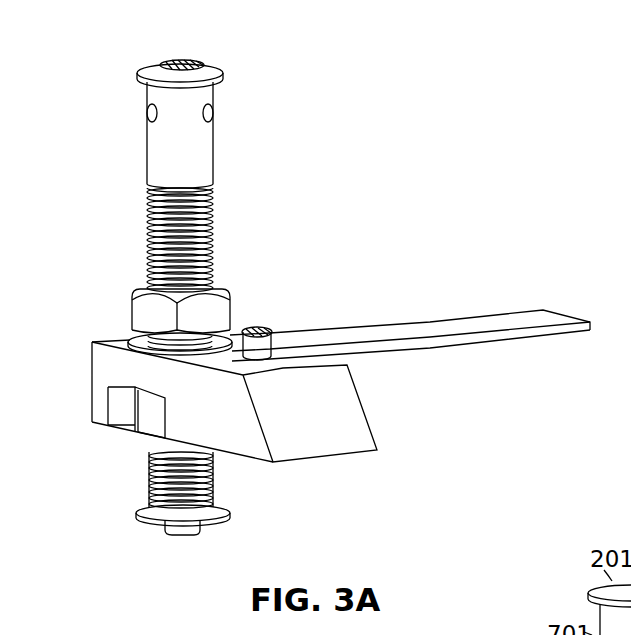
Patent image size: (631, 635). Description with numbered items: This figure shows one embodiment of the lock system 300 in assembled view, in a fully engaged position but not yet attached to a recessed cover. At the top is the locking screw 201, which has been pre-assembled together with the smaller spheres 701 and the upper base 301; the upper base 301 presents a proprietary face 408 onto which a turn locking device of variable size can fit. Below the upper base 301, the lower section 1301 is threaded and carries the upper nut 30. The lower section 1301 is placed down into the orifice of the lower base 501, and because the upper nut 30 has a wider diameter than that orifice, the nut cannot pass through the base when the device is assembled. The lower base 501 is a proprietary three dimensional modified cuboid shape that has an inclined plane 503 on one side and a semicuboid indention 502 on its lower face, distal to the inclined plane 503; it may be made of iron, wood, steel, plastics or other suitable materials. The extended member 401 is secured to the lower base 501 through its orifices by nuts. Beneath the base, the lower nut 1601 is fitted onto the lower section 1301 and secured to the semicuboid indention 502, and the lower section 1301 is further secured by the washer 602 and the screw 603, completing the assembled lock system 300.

The locking screw 201 is at (177, 60).
The proprietary face 408 is at (222, 74).
The upper base 301 is at (210, 176).
The smaller spheres 701 is at (150, 112).
The lower section 1301 is at (152, 246).
The upper nut 30 is at (132, 313).
The lock system 300 is at (256, 322).
The extended member 401 is at (543, 314).
The lower base 501 is at (256, 455).
The inclined plane 503 is at (360, 422).
The semicuboid indention 502 is at (121, 403).
The lower nut 1601 is at (152, 432).
The washer 602 is at (233, 517).
The screw 603 is at (186, 538).